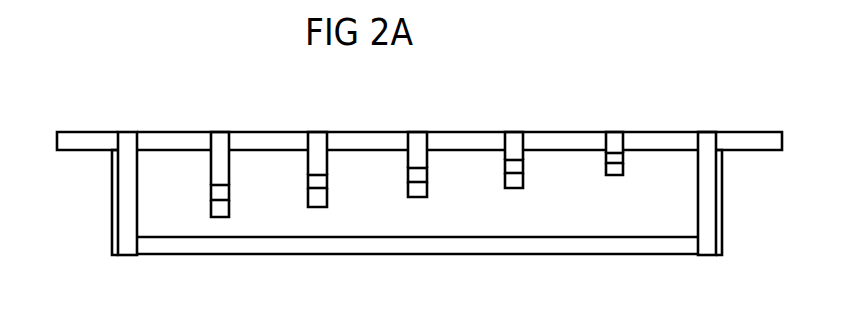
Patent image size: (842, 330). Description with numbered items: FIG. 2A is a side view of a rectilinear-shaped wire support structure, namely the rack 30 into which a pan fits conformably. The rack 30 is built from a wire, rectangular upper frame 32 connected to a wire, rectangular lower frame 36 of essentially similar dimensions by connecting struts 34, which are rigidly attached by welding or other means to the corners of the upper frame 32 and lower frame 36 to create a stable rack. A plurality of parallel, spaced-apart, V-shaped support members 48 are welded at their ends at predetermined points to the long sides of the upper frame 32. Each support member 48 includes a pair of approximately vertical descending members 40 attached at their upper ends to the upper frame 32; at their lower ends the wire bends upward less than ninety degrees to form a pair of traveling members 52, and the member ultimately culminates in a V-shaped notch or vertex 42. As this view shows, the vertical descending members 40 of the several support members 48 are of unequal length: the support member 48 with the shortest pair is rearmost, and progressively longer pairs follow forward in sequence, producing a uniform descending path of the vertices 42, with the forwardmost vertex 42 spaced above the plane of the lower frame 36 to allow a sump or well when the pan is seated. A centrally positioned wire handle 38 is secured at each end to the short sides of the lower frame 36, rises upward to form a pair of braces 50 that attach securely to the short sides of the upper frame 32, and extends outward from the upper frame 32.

The rack 30 is at (458, 128).
The upper frame 32 is at (550, 132).
The connecting strut 34 is at (137, 200).
The lower frame 36 is at (432, 251).
The wire handle 38 is at (82, 127).
The vertical descending member 40 is at (221, 143).
The vertex 42 is at (217, 218).
The V-shaped support member 48 is at (210, 173).
The brace 50 is at (112, 182).
The traveling member 52 is at (223, 193).